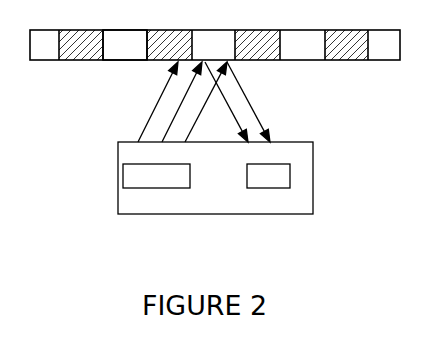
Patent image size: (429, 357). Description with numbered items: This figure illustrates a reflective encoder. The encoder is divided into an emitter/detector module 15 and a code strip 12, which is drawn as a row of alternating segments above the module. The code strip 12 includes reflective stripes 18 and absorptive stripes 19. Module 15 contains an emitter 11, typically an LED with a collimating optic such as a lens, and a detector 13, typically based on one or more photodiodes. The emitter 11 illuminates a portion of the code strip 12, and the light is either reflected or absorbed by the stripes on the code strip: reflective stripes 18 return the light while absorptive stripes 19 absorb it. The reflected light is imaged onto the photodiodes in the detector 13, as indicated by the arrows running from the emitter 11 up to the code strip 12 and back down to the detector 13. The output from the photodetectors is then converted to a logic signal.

The code strip 12 is at (222, 79).
The reflective stripes 18 is at (132, 57).
The absorptive stripes 19 is at (83, 57).
The emitter/detector module 15 is at (244, 197).
The emitter 11 is at (167, 185).
The detector 13 is at (253, 185).